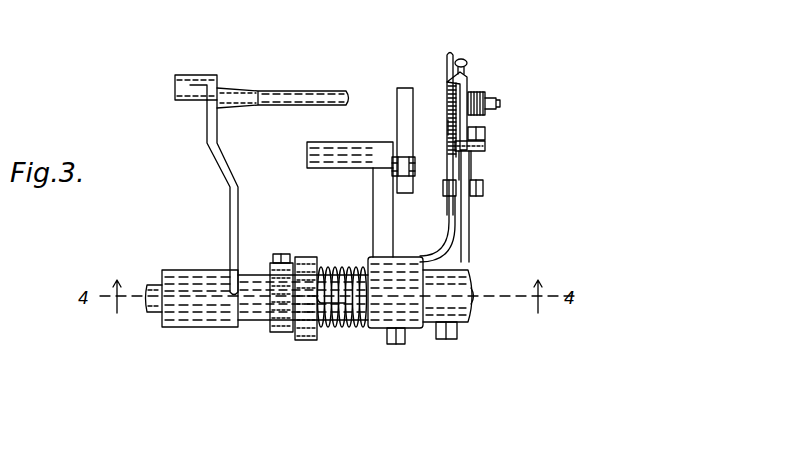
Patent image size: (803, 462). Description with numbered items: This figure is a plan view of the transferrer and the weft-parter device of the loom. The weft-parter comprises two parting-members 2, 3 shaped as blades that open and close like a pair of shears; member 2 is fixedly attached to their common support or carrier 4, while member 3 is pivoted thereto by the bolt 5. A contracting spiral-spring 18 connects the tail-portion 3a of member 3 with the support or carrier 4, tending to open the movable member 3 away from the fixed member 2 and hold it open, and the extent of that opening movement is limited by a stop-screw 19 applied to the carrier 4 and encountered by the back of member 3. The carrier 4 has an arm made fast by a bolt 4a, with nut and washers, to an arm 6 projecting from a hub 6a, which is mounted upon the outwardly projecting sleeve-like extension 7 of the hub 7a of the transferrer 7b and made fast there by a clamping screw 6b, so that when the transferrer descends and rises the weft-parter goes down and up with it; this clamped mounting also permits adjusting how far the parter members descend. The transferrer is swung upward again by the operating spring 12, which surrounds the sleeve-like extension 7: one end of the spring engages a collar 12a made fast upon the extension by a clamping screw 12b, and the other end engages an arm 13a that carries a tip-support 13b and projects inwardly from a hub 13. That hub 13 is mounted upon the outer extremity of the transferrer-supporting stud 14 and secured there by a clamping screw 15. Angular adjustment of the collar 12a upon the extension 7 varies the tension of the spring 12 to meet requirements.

The parting-member 2 is at (447, 100).
The parting-member 3 is at (446, 60).
The tail-portion 3a is at (447, 132).
The support or carrier 4 is at (467, 86).
The bolt 4a is at (445, 196).
The pivot bolt 5 is at (500, 103).
The arm 6 is at (469, 224).
The hub 6a is at (432, 258).
The clamping screw 6b is at (394, 344).
The sleeve-like extension 7 is at (255, 322).
The hub of the transferrer 7a is at (192, 327).
The transferrer 7b is at (222, 87).
The operating spring 12 is at (330, 267).
The collar 12a is at (304, 257).
The clamping screw 12b is at (276, 254).
The hub 13 is at (470, 272).
The arm 13a is at (383, 205).
The tip-support 13b is at (397, 112).
The transferrer-supporting stud 14 is at (476, 304).
The clamping screw 15 is at (446, 339).
The contracting spiral-spring 18 is at (485, 133).
The stop-screw 19 is at (463, 59).